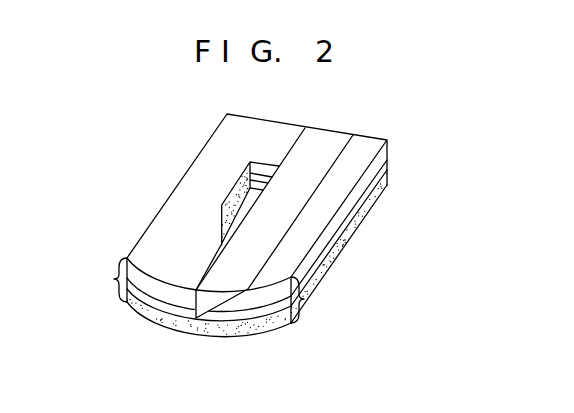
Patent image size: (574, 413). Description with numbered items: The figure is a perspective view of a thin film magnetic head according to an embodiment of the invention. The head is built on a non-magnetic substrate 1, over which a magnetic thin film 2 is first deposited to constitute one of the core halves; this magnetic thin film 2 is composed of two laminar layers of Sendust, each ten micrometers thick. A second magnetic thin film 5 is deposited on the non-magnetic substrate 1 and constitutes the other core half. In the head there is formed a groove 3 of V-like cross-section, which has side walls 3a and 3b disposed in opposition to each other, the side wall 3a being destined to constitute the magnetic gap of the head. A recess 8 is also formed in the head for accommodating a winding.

The non-magnetic substrate 1 is at (201, 333).
The magnetic thin film 2 is at (114, 279).
The groove 3 is at (203, 306).
The side wall 3a is at (196, 292).
The side wall 3b is at (235, 300).
The magnetic thin film 5 is at (330, 141).
The recess 8 is at (248, 195).